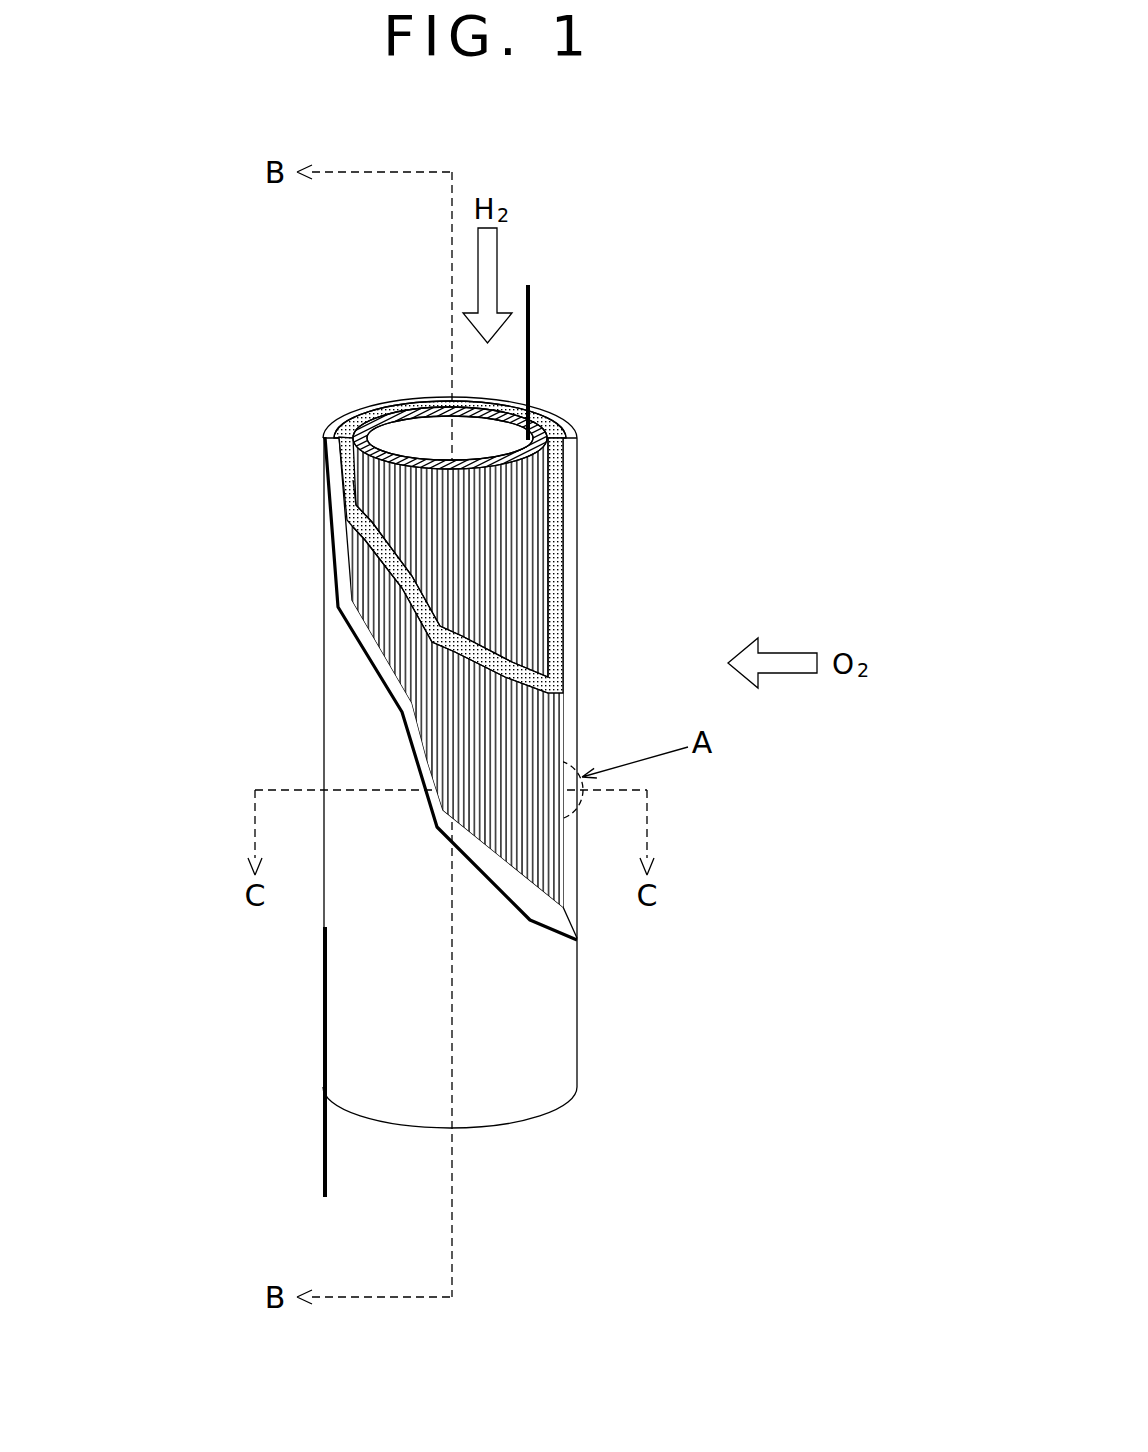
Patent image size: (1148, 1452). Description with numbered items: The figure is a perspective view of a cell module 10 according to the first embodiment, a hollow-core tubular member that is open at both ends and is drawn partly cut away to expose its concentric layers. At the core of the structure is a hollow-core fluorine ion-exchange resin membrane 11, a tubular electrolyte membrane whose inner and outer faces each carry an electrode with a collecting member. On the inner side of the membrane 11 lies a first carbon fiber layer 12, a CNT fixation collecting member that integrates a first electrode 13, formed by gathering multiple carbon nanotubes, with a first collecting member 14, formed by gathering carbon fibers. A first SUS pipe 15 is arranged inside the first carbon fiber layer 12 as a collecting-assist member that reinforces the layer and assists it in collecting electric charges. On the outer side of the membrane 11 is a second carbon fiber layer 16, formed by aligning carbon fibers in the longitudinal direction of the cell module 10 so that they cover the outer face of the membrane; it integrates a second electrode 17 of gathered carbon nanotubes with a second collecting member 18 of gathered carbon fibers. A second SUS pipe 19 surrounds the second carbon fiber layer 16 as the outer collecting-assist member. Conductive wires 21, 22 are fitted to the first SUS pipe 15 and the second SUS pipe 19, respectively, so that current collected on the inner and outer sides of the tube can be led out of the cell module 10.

The cell module 10 is at (726, 816).
The fluorine ion-exchange resin membrane 11 is at (343, 422).
The first carbon fiber layer 12 is at (510, 555).
The first electrode 13 is at (761, 463).
The first collecting member 14 is at (761, 513).
The first SUS pipe 15 is at (527, 500).
The second carbon fiber layer 16 is at (392, 600).
The second electrode 17 is at (169, 540).
The second collecting member 18 is at (169, 590).
The second SUS pipe 19 is at (353, 703).
The conductive wire 21 is at (529, 345).
The conductive wire 22 is at (325, 1095).